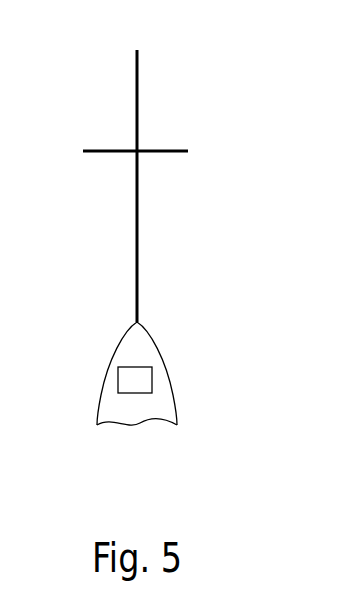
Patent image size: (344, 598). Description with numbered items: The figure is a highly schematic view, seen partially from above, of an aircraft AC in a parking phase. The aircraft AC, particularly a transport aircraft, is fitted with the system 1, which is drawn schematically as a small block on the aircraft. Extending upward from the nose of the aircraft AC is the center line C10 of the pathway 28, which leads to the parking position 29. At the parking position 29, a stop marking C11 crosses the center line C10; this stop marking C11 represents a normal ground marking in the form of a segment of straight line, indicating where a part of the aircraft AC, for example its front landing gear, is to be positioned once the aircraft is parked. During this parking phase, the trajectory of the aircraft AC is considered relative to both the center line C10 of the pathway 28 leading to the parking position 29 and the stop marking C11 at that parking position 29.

The system 1 is at (117, 380).
The pathway 28 is at (108, 220).
The parking position 29 is at (102, 140).
The center line C10 is at (138, 232).
The stop marking C11 is at (168, 150).
The aircraft AC is at (169, 368).